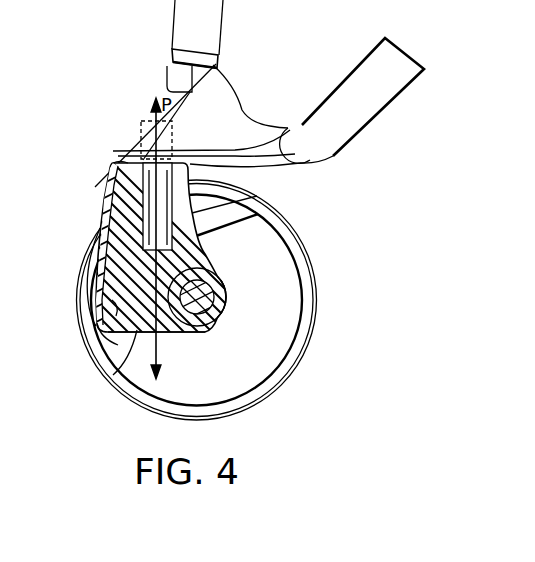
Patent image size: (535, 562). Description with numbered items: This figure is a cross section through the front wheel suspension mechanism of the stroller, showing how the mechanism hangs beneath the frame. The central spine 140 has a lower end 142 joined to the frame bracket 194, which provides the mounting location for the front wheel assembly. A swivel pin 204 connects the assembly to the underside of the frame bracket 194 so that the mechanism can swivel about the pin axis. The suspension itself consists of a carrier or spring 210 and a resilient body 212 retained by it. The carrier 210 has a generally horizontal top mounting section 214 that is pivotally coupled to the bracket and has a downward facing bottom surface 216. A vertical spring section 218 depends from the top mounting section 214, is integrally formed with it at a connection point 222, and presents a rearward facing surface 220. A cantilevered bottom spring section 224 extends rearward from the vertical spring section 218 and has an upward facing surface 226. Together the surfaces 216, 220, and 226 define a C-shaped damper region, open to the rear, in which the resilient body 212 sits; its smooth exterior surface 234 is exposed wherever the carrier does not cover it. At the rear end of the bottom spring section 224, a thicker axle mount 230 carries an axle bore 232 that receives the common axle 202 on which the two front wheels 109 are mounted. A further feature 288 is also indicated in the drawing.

The front wheels 109 is at (285, 327).
The central spine 140 is at (387, 88).
The lower end of the spine 142 is at (337, 135).
The frame bracket 194 is at (232, 128).
The common axle 202 is at (203, 313).
The swivel pin 204 is at (140, 177).
The carrier or spring 210 is at (92, 221).
The resilient body 212 is at (223, 222).
The top mounting section 214 is at (132, 165).
The bottom surface 216 is at (228, 177).
The vertical spring section 218 is at (105, 297).
The rearward facing surface 220 is at (115, 307).
The connection point 222 is at (118, 167).
The bottom spring section 224 is at (128, 348).
The upward facing surface 226 is at (183, 333).
The axle mount 230 is at (200, 268).
The axle bore 232 is at (216, 297).
The exterior surface 234 is at (210, 187).
The lower corner 288 is at (100, 330).